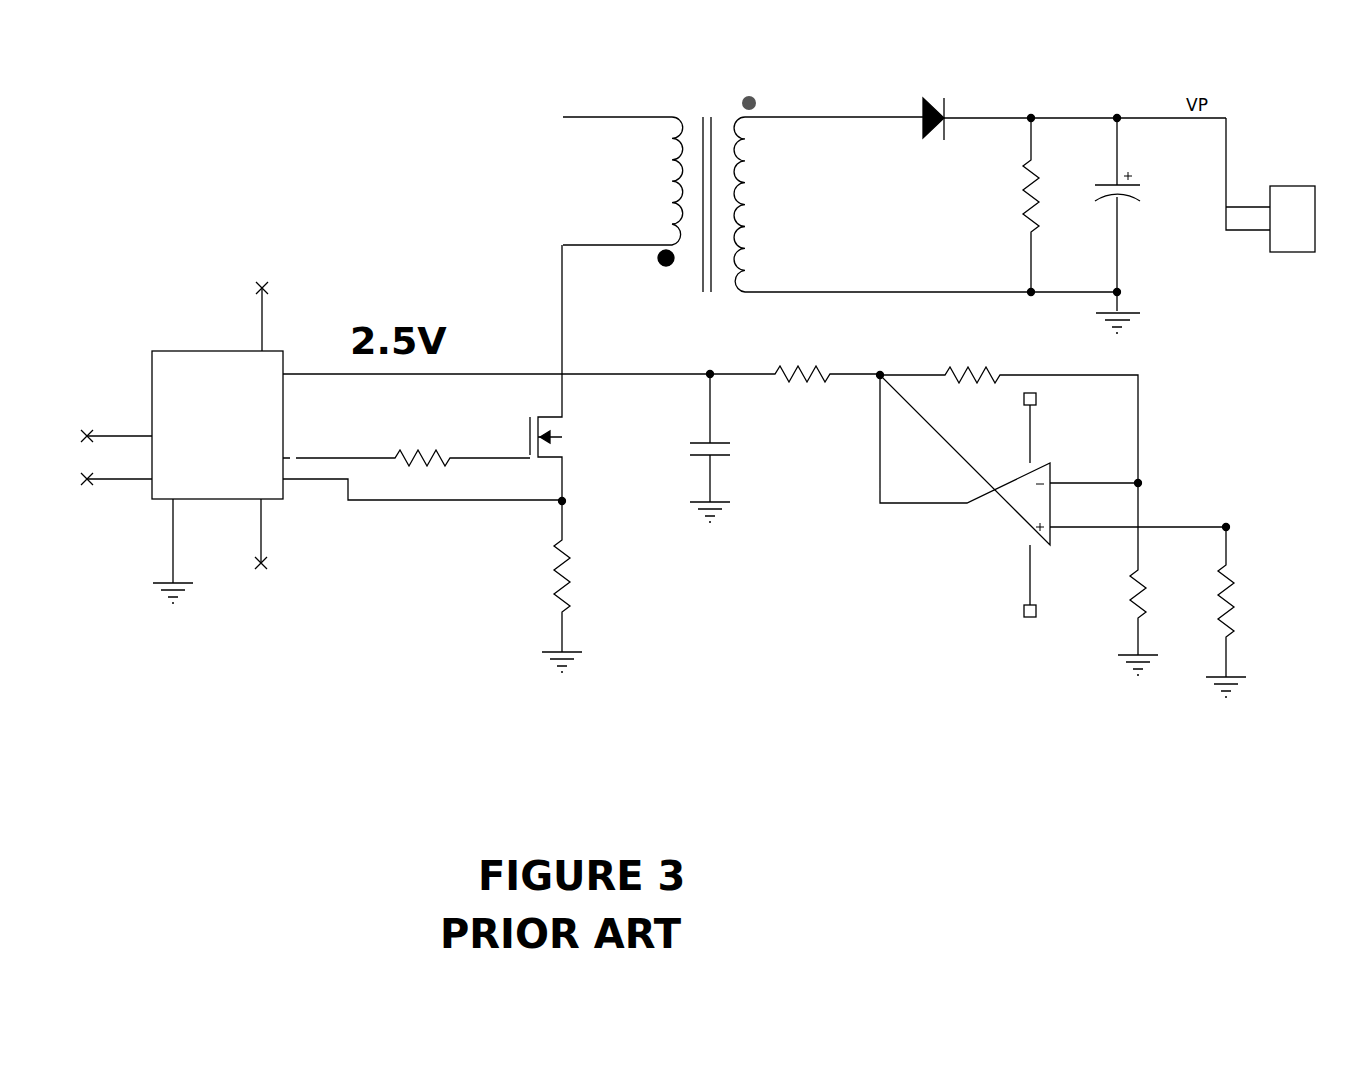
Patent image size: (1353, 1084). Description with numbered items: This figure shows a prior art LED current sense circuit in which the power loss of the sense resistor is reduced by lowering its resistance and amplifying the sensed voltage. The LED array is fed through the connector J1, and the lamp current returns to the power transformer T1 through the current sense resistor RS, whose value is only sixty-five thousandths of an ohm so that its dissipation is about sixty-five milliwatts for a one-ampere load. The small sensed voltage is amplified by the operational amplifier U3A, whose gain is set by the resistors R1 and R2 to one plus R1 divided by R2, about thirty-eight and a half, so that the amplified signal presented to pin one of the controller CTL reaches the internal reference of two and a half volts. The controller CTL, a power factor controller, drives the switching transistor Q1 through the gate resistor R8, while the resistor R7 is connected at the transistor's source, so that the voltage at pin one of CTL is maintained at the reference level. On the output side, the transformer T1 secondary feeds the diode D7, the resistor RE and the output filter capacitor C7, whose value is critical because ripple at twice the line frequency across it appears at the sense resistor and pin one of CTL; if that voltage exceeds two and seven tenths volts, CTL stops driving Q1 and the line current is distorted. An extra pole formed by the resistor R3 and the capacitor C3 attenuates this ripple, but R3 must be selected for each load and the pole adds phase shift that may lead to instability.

The controller CTL is at (395, 442).
The gate resistor R8 is at (425, 443).
The switching transistor Q1 is at (567, 375).
The resistor R7 1.62 R7 is at (580, 586).
The transformer T1 is at (840, 184).
The diode D7 is at (1074, 107).
The resistor RE 1K 1W RE is at (1052, 205).
The output filter capacitor C7 is at (1148, 224).
The connector J1 is at (1270, 185).
The pole capacitor C3 is at (747, 447).
The pole resistor R3 is at (795, 346).
The gain resistor R1 is at (1008, 409).
The operational amplifier U3A is at (1055, 496).
The gain resistor R2 is at (1121, 579).
The current sense resistor RS is at (1255, 612).